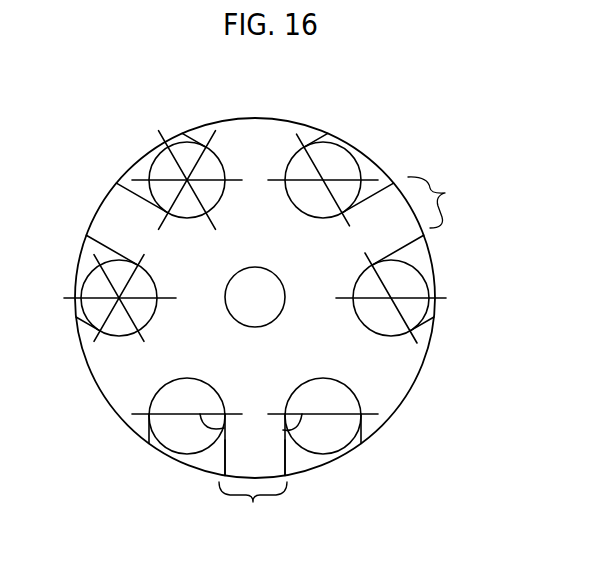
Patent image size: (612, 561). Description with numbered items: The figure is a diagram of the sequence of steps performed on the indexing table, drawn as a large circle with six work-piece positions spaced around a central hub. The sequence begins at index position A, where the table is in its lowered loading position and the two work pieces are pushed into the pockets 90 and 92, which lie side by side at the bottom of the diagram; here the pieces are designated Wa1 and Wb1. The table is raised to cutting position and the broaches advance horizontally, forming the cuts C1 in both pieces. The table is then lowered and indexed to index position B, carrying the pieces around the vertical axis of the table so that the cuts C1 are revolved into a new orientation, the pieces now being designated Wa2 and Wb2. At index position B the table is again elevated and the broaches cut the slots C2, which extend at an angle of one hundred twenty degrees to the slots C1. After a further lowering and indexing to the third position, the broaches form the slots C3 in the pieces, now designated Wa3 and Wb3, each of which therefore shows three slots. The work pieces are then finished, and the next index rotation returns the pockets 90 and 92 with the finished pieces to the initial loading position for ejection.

The work piece Wa in first index position Wa1 is at (201, 399).
The work piece Wa in second index position Wa2 is at (397, 333).
The work piece Wa in third index position Wa3 is at (189, 150).
The work piece Wb in first index position Wb1 is at (348, 366).
The work piece Wb in second index position Wb2 is at (348, 152).
The work piece Wb in third index position Wb3 is at (143, 316).
The first cut C1 is at (160, 202).
The second slot C2 is at (207, 204).
The third slot C3 is at (215, 172).
The index position B is at (434, 201).
The index position A is at (253, 507).
The pocket 90 is at (222, 466).
The pocket 92 is at (287, 462).